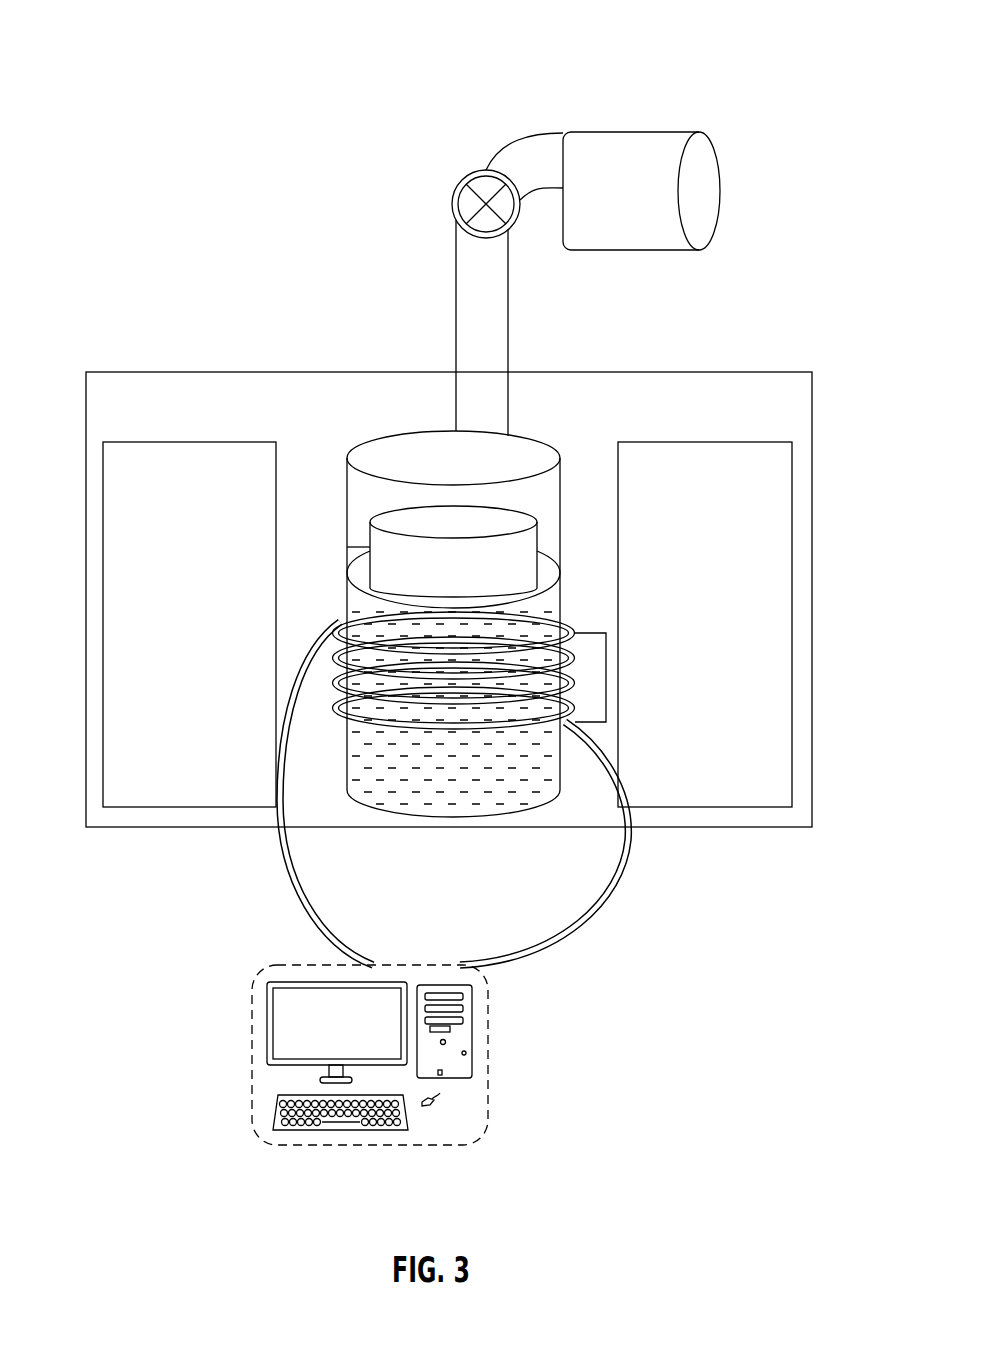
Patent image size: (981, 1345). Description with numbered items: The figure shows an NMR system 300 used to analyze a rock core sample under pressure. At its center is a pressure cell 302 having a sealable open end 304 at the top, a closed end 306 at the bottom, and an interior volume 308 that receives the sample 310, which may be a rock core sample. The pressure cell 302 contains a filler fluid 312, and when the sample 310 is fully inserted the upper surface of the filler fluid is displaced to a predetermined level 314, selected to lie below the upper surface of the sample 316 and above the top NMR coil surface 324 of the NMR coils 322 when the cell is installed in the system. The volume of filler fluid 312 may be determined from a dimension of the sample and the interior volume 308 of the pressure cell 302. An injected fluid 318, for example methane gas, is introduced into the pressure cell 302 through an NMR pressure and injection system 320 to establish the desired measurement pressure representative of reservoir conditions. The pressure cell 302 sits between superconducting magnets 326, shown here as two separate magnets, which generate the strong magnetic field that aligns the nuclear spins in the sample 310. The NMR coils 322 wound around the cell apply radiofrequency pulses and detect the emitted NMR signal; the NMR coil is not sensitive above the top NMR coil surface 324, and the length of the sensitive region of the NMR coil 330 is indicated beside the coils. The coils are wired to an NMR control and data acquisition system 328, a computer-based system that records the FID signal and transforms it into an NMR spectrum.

The NMR system 300 is at (782, 34).
The pressure cell 302 is at (431, 632).
The sealable open end 304 is at (437, 448).
The closed end 306 is at (453, 817).
The interior volume 308 is at (363, 548).
The sample 310 is at (493, 492).
The filler fluid 312 is at (343, 788).
The predetermined level 314 is at (556, 585).
The upper surface of the sample 316 is at (530, 520).
The injected fluid 318 is at (721, 194).
The NMR pressure and injection system 320 is at (465, 180).
The NMR coils 322 is at (513, 737).
The top NMR coil surface 324 is at (332, 622).
The superconducting magnets 326 is at (177, 442).
The NMR control and data acquisition system 328 is at (252, 1056).
The length of the sensitive region of the NMR coil 330 is at (607, 678).